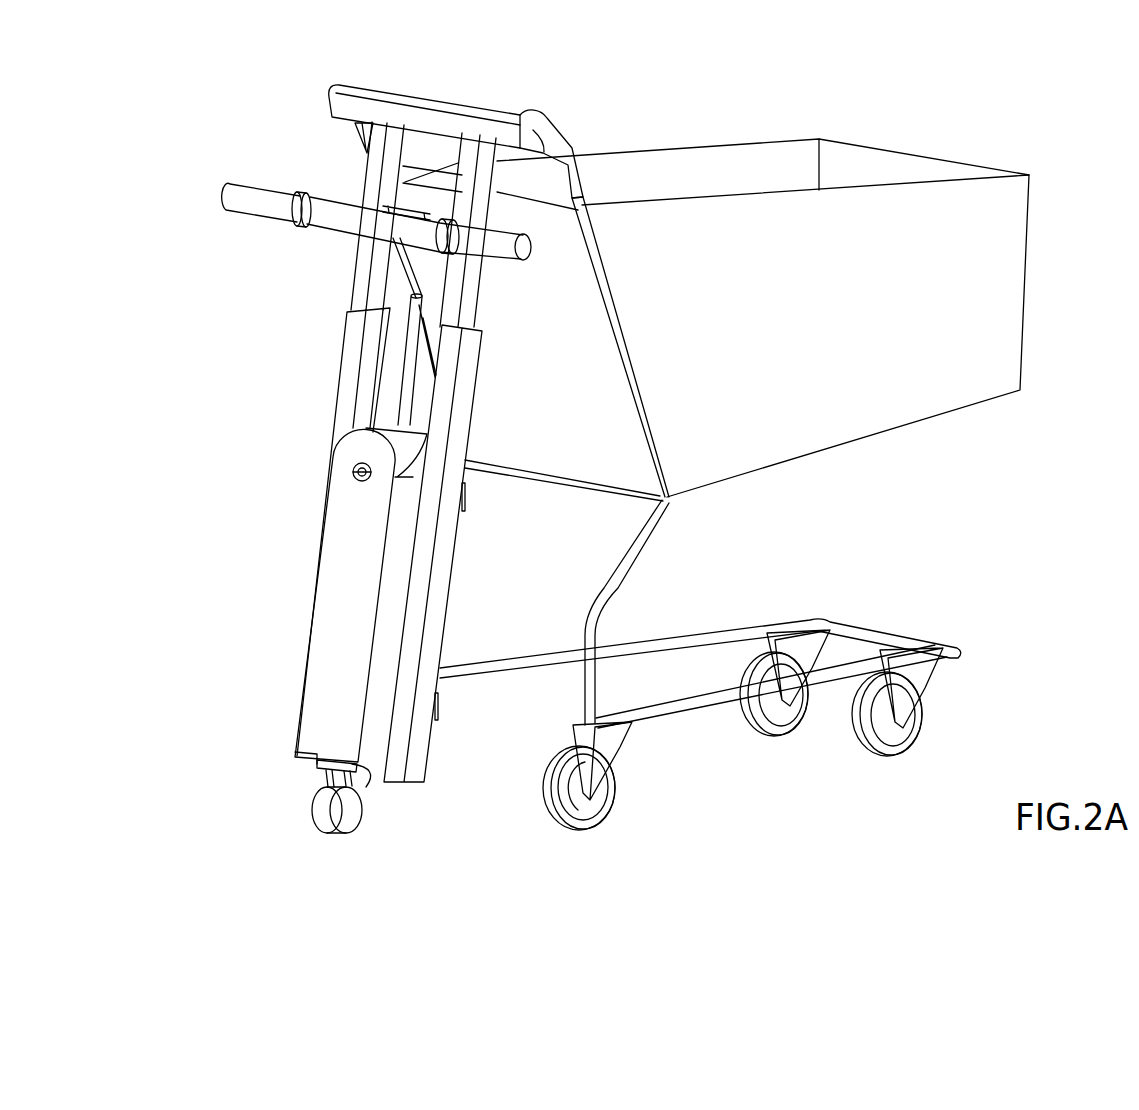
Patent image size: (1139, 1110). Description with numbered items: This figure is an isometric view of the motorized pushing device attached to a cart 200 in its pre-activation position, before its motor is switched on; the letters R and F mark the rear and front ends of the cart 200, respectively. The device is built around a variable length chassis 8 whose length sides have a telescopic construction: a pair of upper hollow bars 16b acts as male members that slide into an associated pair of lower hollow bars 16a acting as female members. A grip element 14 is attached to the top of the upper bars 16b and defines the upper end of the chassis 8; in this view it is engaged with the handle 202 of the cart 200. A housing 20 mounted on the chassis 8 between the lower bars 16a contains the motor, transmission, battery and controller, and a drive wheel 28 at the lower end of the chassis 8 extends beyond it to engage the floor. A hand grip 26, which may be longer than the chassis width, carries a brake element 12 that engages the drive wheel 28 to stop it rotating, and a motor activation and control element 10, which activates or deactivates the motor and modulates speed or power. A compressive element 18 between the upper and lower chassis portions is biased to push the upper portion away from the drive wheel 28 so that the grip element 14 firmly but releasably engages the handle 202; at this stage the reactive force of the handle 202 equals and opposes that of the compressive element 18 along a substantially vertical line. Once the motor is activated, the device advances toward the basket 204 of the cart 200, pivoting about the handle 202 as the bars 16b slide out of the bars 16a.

The variable length chassis 8 is at (300, 357).
The motor activation and control element 10 is at (505, 236).
The brake element 12 is at (273, 183).
The grip element 14 is at (430, 115).
The lower hollow bars 16a is at (338, 422).
The upper hollow bars 16b is at (360, 290).
The compressive element 18 is at (402, 391).
The housing 20 is at (332, 598).
The hand grip 26 is at (333, 220).
The drive wheel 28 is at (356, 802).
The cart 200 is at (734, 447).
The handle 202 is at (516, 116).
The basket 204 is at (776, 142).
The rear end R is at (535, 433).
The front end F is at (1049, 309).